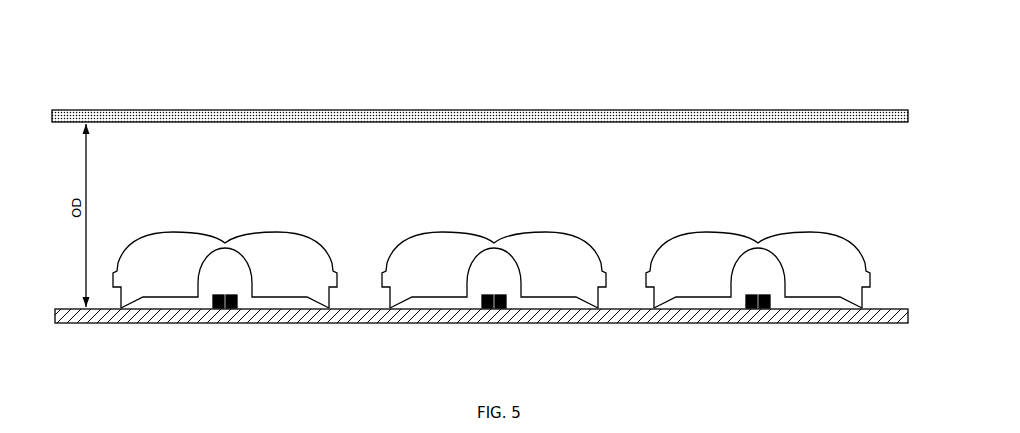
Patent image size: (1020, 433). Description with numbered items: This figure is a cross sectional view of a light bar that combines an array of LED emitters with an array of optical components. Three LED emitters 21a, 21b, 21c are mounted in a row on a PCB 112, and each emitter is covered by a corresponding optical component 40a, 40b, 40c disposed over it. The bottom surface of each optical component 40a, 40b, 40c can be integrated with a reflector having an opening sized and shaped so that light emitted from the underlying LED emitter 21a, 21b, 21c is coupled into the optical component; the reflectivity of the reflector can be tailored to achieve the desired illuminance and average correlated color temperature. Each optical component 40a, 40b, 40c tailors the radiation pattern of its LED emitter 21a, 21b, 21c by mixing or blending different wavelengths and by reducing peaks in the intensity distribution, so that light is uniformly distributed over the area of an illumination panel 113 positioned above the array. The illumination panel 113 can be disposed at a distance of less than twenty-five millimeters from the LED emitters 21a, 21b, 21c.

The illumination panel 113 is at (423, 110).
The PCB 112 is at (616, 323).
The optical component 40a is at (228, 204).
The optical component 40b is at (506, 206).
The optical component 40c is at (747, 201).
The LED emitter 21a is at (226, 302).
The LED emitter 21b is at (496, 302).
The LED emitter 21c is at (758, 302).